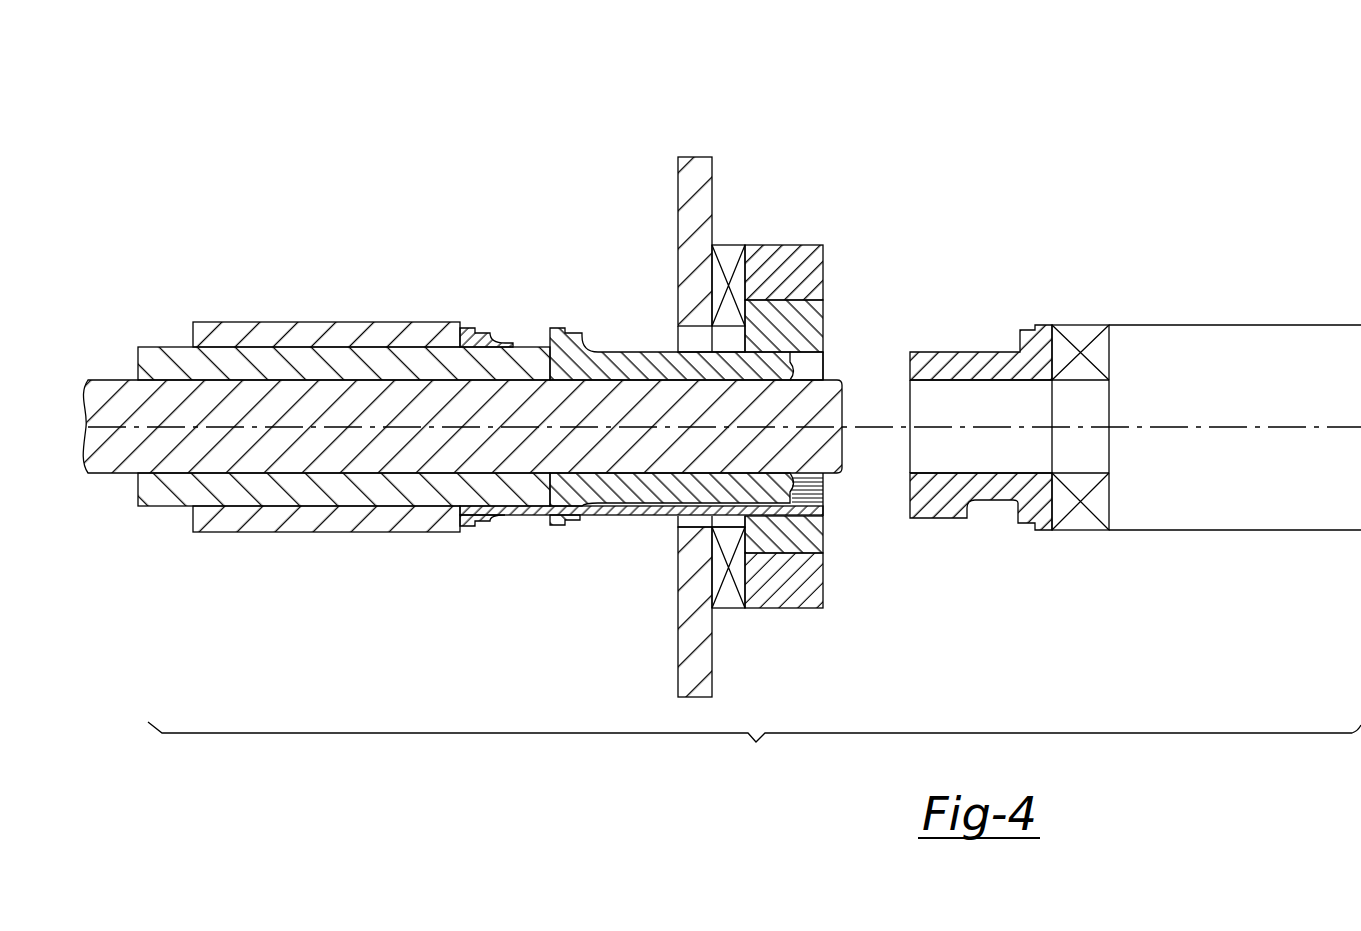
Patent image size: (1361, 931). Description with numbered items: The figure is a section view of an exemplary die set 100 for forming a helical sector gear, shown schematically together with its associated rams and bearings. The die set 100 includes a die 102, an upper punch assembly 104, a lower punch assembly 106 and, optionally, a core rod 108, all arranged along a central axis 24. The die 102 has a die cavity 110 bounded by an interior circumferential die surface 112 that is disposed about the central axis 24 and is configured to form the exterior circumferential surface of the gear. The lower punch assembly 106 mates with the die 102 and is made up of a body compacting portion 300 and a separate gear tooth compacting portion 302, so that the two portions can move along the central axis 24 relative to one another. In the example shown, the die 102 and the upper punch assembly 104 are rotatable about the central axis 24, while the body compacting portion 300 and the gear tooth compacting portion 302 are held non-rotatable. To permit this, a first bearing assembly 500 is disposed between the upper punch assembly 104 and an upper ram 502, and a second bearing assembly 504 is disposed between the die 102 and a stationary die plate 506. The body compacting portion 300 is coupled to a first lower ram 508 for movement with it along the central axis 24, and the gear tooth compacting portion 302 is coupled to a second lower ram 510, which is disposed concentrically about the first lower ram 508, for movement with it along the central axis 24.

The die set 100 is at (1043, 128).
The central axis 24 is at (1198, 425).
The die 102 is at (815, 313).
The upper punch assembly 104 is at (975, 362).
The lower punch assembly 106 is at (630, 611).
The core rod 108 is at (106, 388).
The die cavity 110 is at (818, 486).
The interior circumferential die surface 112 is at (808, 370).
The body compacting portion 300 is at (615, 487).
The gear tooth compacting portion 302 is at (533, 515).
The first bearing assembly 500 is at (1075, 333).
The upper ram 502 is at (1274, 335).
The second bearing assembly 504 is at (728, 250).
The stationary die plate 506 is at (684, 180).
The first lower ram 508 is at (383, 500).
The second lower ram 510 is at (207, 520).